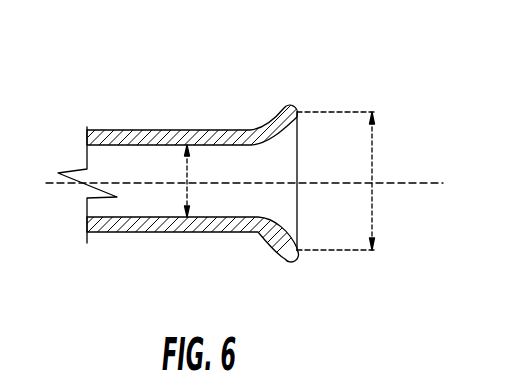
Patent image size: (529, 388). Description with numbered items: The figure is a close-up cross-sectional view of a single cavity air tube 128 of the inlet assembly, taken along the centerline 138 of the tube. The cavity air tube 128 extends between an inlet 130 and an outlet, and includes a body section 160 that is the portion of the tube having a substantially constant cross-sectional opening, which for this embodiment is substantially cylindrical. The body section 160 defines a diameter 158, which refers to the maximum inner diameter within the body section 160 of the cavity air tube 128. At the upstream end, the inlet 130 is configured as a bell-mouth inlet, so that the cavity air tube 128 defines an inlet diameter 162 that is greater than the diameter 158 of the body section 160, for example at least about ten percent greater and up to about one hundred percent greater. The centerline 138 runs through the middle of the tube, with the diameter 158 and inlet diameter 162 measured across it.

The cavity air tube 128 is at (214, 161).
The inlet 130 is at (302, 151).
The centerline 138 is at (413, 183).
The diameter 158 is at (187, 180).
The body section 160 is at (193, 237).
The inlet diameter 162 is at (373, 168).